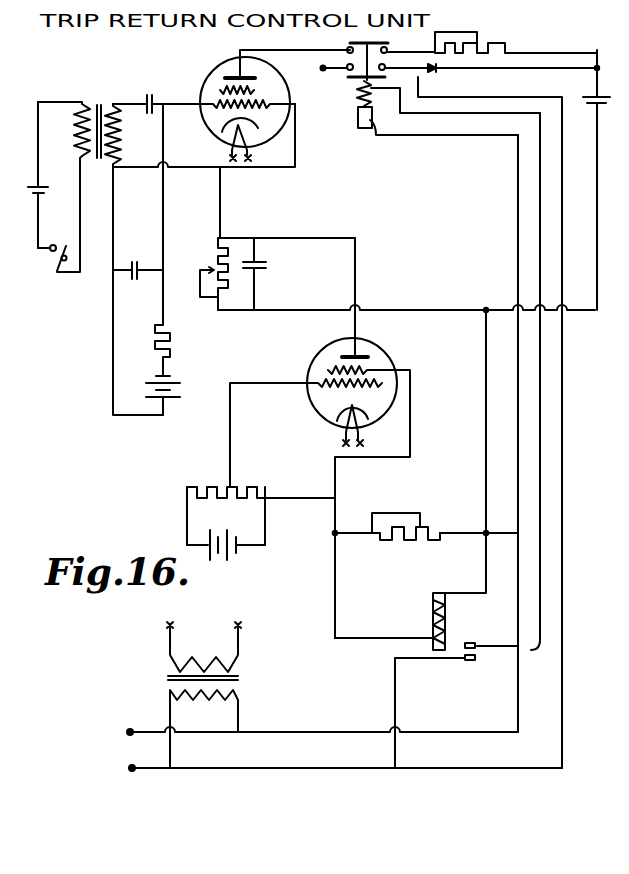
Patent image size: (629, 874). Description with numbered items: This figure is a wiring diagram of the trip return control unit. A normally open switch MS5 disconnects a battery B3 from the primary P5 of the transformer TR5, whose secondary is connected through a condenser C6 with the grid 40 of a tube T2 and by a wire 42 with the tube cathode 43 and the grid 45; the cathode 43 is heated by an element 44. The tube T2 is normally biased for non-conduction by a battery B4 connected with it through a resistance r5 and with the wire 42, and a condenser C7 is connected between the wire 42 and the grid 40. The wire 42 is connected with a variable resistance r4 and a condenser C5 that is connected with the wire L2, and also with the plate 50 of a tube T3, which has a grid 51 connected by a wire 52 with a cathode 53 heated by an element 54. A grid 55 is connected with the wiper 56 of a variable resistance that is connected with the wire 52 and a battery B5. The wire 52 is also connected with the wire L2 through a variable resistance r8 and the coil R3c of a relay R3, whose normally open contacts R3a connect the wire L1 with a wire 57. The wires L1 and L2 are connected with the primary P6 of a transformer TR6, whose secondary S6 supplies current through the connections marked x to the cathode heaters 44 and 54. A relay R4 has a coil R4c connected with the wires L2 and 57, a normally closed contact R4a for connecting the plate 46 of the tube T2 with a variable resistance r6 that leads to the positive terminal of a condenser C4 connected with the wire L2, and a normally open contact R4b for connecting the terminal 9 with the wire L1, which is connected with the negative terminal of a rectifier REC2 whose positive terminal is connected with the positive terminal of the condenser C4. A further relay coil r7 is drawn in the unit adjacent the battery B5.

The terminal 9 is at (323, 70).
The grid 40 is at (204, 102).
The wire 42 is at (220, 171).
The cathode 43 is at (214, 108).
The heating element 44 is at (246, 144).
The grid 45 is at (280, 75).
The plate 46 is at (250, 77).
The plate 50 is at (345, 352).
The grid 51 is at (330, 368).
The wire 52 is at (292, 512).
The cathode 53 is at (337, 411).
The heating element 54 is at (372, 430).
The grid 55 is at (318, 381).
The wiper 56 is at (233, 486).
The wire 57 is at (560, 118).
The battery B3 is at (29, 175).
The battery B4 is at (164, 387).
The battery B5 is at (240, 562).
The condenser C4 is at (602, 180).
The condenser C5 is at (262, 266).
The condenser C6 is at (158, 88).
The condenser C7 is at (145, 254).
The wire L1 is at (562, 760).
The wire L2 is at (603, 173).
The switch MS5 is at (47, 270).
The primary P5 is at (64, 187).
The primary P6 is at (216, 705).
The relay R3 is at (406, 627).
The normally open contacts R3a is at (478, 661).
The relay coil R3c is at (447, 614).
The relay R4 is at (342, 125).
The normally closed contact R4a is at (349, 43).
The normally open contact R4b is at (385, 70).
The relay coil R4c is at (376, 137).
The rectifier REC2 is at (437, 74).
The secondary S6 is at (208, 658).
The tube T2 is at (287, 137).
The tube T3 is at (385, 353).
The transformer TR5 is at (98, 104).
The transformer TR6 is at (166, 679).
The variable resistance r4 is at (208, 253).
The resistance r5 is at (171, 352).
The variable resistance r6 is at (483, 43).
The relay coil r7 is at (222, 487).
The variable resistance r8 is at (425, 525).